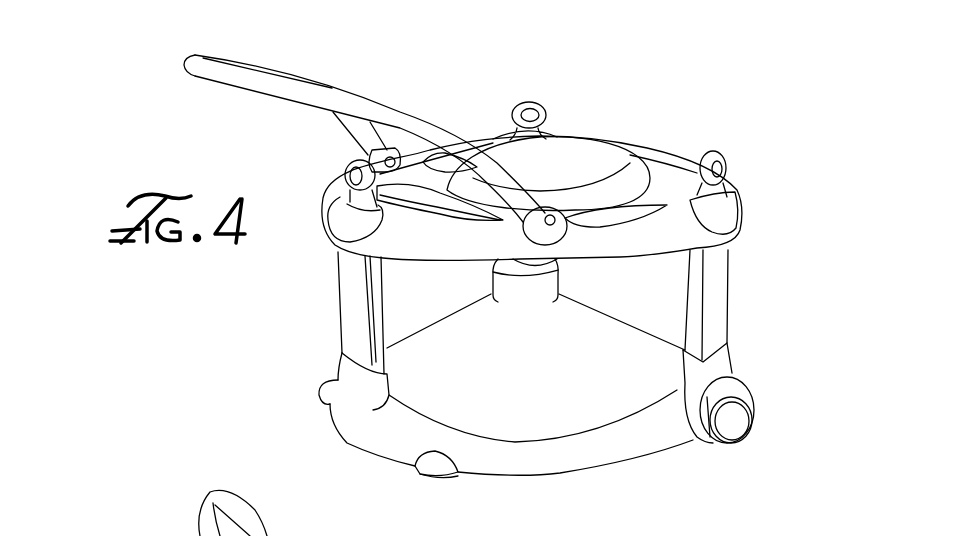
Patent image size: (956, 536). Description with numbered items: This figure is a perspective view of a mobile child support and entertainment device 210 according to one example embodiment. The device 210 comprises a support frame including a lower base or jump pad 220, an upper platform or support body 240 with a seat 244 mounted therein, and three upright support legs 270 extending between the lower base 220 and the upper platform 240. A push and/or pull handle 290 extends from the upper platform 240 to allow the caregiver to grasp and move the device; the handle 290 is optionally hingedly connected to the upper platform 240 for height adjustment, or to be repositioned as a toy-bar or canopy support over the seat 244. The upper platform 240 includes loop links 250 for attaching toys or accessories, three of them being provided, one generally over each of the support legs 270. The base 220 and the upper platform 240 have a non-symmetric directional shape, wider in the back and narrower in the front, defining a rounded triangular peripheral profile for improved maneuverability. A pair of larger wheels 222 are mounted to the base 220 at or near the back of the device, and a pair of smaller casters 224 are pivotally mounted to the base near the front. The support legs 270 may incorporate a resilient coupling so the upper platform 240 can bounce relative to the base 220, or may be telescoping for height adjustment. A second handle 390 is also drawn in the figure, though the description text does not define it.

The mobile child support and entertainment device 210 is at (678, 74).
The lower base or jump pad 220 is at (599, 455).
The larger wheels 222 is at (732, 427).
The smaller casters 224 is at (320, 388).
The upper platform or support body 240 is at (670, 188).
The seat 244 is at (585, 157).
The loop links 250 is at (345, 174).
The upright support legs 270 is at (352, 303).
The push and/or pull handle 290 is at (191, 51).
The handle 390 is at (203, 503).